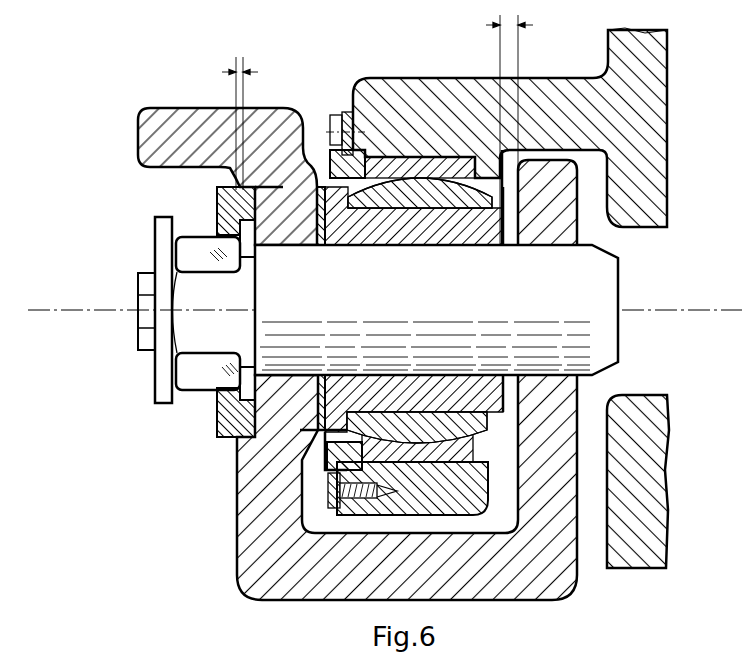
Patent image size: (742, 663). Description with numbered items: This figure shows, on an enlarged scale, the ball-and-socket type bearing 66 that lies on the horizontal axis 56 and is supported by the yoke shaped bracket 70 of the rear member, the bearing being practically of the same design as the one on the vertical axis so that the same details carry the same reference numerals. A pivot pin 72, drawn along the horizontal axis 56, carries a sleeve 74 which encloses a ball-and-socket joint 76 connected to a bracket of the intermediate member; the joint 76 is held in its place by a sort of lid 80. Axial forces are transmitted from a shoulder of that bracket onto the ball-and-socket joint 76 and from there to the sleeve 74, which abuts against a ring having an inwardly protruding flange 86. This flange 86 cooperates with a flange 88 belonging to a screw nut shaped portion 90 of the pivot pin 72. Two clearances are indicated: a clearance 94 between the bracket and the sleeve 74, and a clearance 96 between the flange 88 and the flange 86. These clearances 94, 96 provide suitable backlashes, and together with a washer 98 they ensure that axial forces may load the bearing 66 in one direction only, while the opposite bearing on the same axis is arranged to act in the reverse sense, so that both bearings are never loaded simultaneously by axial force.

The horizontal axis 56 is at (56, 310).
The bearing 66 is at (397, 55).
The yoke shaped bracket 70 is at (166, 110).
The pivot pin 72 is at (583, 270).
The sleeve 74 is at (437, 385).
The ball-and-socket joint 76 is at (425, 448).
The lid 80 is at (325, 155).
The inwardly protruding flange 86 is at (217, 410).
The flange 88 is at (246, 375).
The screw nut shaped portion 90 is at (187, 338).
The clearance 94 is at (500, 26).
The clearance 96 is at (245, 65).
The washer 98 is at (325, 377).